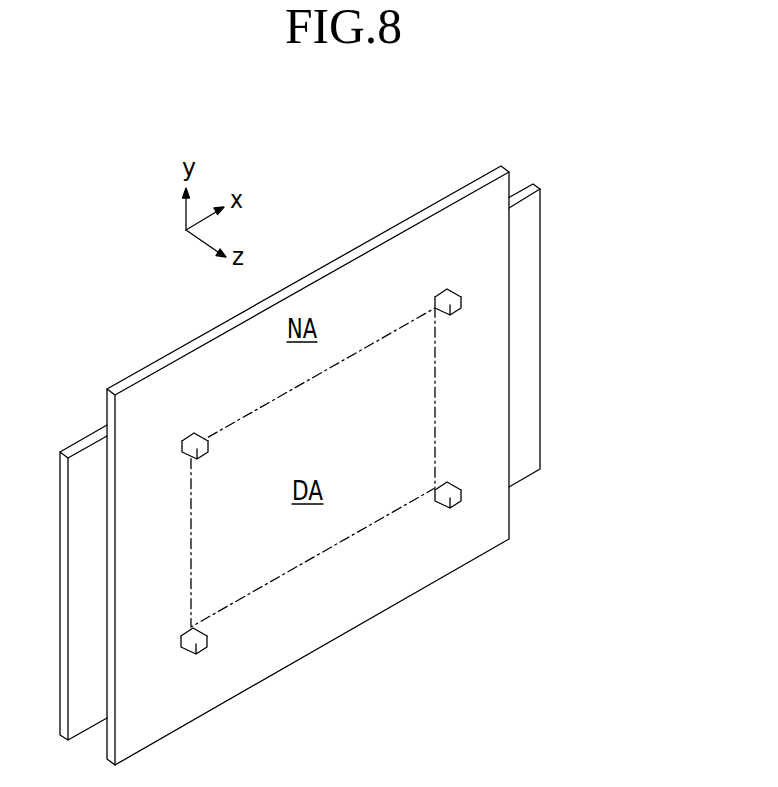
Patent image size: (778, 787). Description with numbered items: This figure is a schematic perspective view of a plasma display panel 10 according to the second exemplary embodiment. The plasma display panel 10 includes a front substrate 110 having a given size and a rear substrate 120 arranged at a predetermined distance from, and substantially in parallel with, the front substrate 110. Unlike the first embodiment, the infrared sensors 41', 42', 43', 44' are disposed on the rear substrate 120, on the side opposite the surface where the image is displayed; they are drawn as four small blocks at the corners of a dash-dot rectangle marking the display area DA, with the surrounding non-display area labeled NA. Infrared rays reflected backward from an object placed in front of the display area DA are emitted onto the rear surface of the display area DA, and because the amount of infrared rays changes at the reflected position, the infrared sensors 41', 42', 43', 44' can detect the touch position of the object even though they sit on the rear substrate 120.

The plasma display panel 10 is at (547, 85).
The front substrate 110 is at (525, 190).
The rear substrate 120 is at (470, 188).
The infrared sensor 41' is at (421, 344).
The infrared sensor 42' is at (235, 453).
The infrared sensor 43' is at (405, 478).
The infrared sensor 44' is at (220, 589).